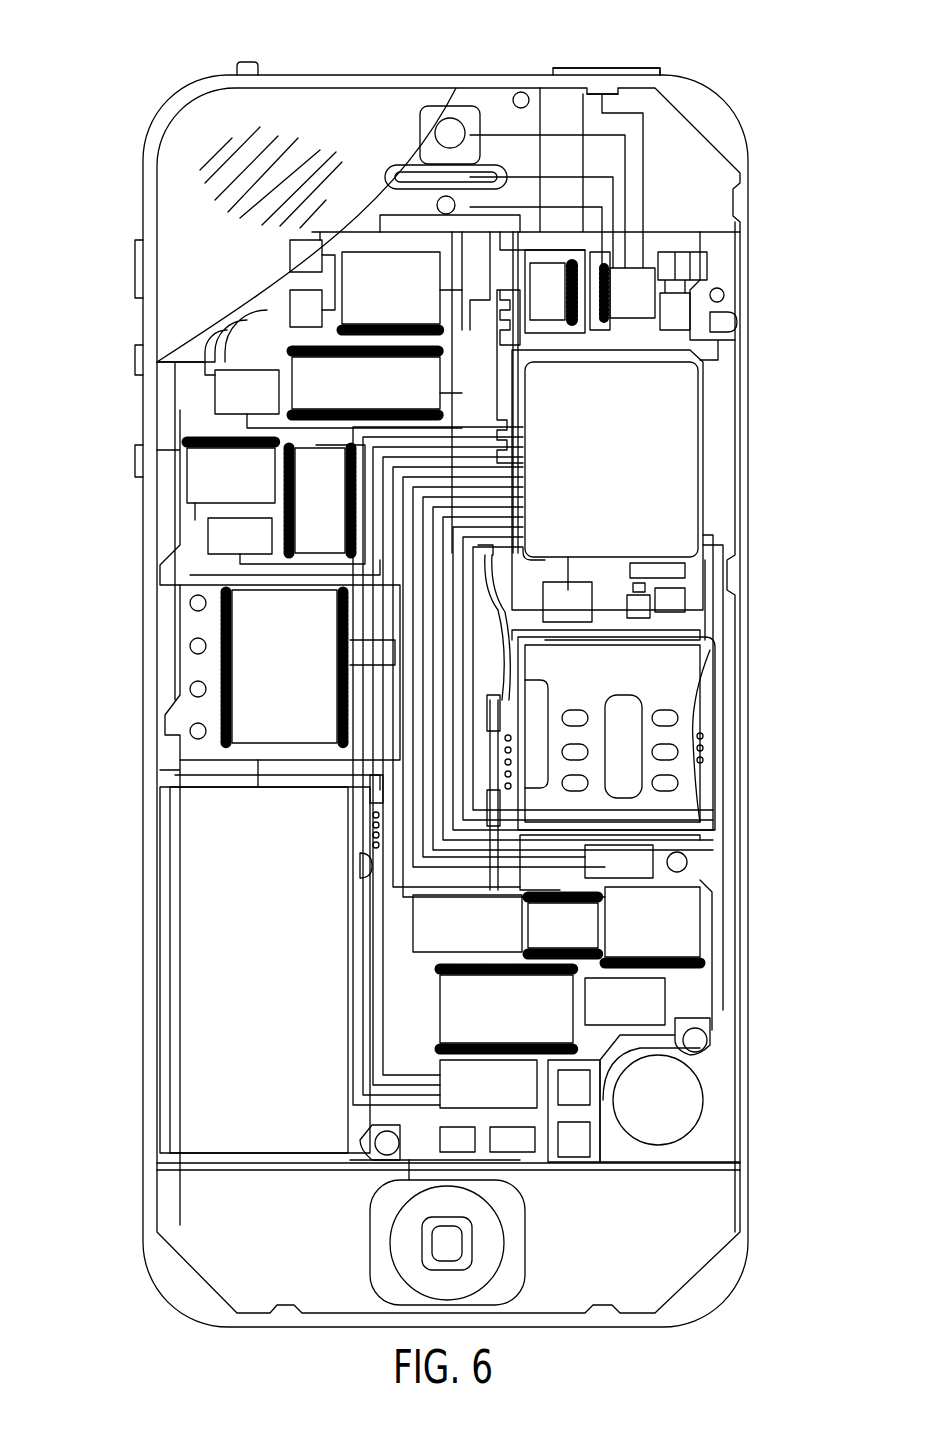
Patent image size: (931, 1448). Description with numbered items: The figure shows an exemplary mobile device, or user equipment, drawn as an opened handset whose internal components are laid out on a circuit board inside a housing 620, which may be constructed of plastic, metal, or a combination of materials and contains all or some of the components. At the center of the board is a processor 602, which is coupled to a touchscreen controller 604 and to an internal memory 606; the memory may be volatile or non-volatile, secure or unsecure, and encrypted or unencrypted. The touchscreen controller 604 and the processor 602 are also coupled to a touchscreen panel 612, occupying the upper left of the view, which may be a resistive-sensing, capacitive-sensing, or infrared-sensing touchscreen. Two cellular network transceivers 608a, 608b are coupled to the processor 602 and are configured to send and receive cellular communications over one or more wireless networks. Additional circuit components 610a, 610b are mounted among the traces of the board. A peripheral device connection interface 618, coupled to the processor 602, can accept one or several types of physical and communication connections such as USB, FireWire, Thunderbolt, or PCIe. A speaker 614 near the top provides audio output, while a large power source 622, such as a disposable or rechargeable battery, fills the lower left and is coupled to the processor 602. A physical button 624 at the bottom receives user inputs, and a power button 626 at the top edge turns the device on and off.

The processor 602 is at (655, 467).
The touchscreen controller 604 is at (380, 298).
The internal memory 606 is at (288, 688).
The cellular network transceiver 608a is at (648, 270).
The cellular network transceiver 608b is at (322, 522).
The circuit component 610a is at (312, 382).
The circuit component 610b is at (697, 318).
The touchscreen panel 612 is at (183, 216).
The speaker 614 is at (405, 162).
The peripheral device connection interface 618 is at (436, 1079).
The housing 620 is at (748, 1118).
The power source 622 is at (222, 950).
The physical button 624 is at (446, 1243).
The power button 626 is at (603, 70).